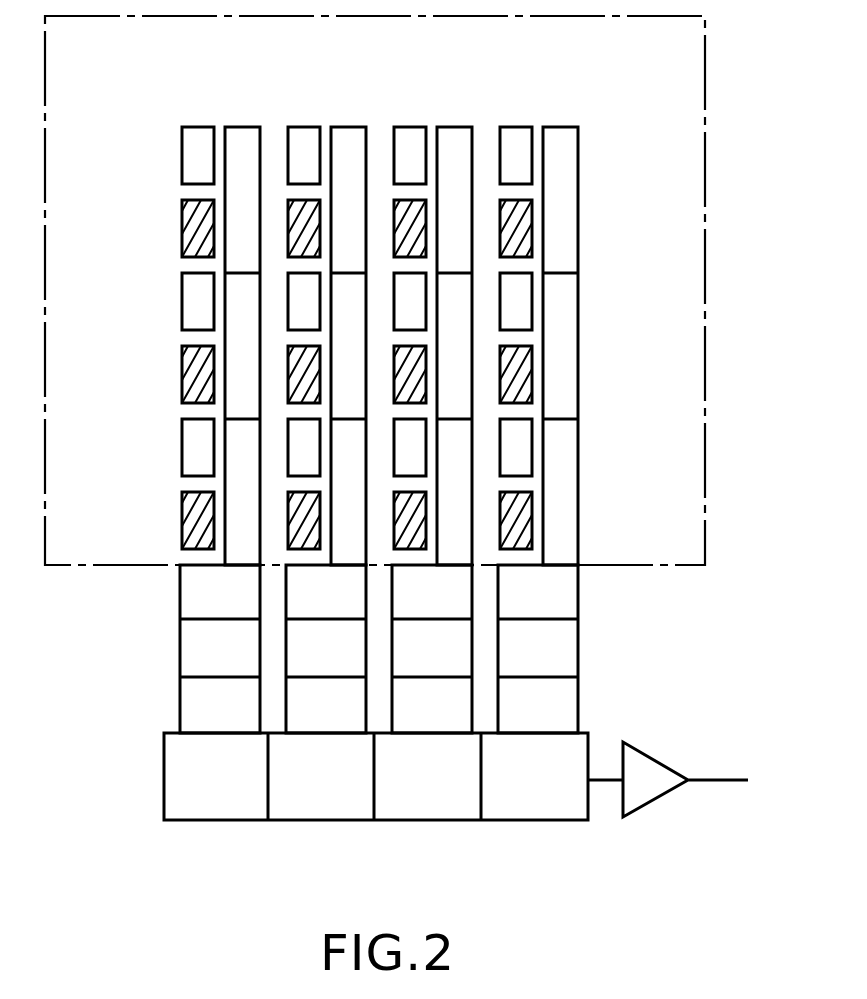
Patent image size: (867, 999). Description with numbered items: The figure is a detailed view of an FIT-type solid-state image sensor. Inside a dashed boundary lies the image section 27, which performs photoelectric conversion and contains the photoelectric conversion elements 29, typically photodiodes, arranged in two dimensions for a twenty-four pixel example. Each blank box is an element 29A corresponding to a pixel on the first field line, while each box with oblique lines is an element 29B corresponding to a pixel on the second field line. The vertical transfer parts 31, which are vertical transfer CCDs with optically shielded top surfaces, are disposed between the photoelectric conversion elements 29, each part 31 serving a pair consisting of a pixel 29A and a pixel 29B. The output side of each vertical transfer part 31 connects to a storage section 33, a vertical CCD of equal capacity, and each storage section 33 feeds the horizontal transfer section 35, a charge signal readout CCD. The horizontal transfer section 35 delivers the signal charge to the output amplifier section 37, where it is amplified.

The image section 27 is at (705, 432).
The photoelectric conversion element 29 is at (321, 311).
The first field line pixel element 29A is at (203, 127).
The second field line pixel element 29B is at (186, 236).
The vertical transfer part 31 is at (303, 127).
The storage section 33 is at (180, 592).
The horizontal transfer section 35 is at (164, 792).
The output amplifier section 37 is at (656, 757).